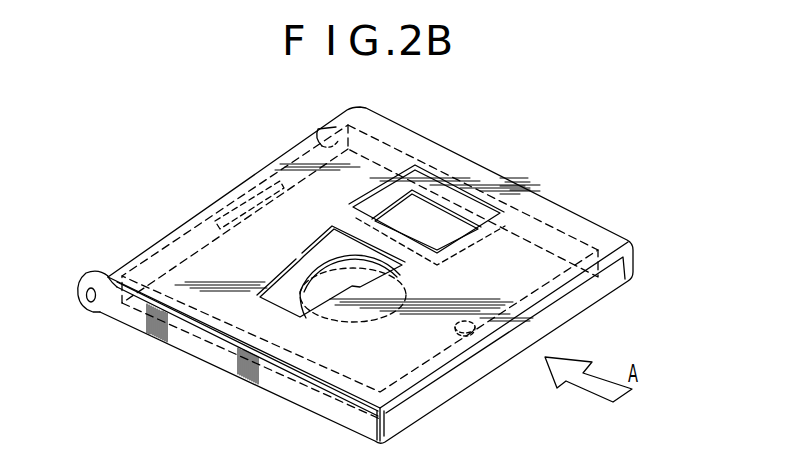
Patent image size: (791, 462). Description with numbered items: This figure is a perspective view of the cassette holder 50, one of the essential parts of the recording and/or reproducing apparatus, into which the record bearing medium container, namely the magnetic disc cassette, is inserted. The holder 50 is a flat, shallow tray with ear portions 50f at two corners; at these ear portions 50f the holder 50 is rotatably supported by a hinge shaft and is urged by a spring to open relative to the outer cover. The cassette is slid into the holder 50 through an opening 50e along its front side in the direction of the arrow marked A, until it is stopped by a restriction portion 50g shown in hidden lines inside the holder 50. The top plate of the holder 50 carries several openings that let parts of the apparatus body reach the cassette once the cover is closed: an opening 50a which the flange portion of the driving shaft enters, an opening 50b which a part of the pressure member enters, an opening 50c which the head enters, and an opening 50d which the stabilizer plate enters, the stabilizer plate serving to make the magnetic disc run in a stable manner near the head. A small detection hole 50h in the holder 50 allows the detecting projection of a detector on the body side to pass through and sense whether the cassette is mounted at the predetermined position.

The cassette holder 50 is at (568, 222).
The opening 50a is at (310, 316).
The opening 50b is at (287, 280).
The opening 50c is at (462, 214).
The opening 50d is at (432, 172).
The opening 50e is at (433, 397).
The ear portions 50f is at (318, 126).
The restriction portion 50g is at (231, 194).
The detection hole 50h is at (459, 334).